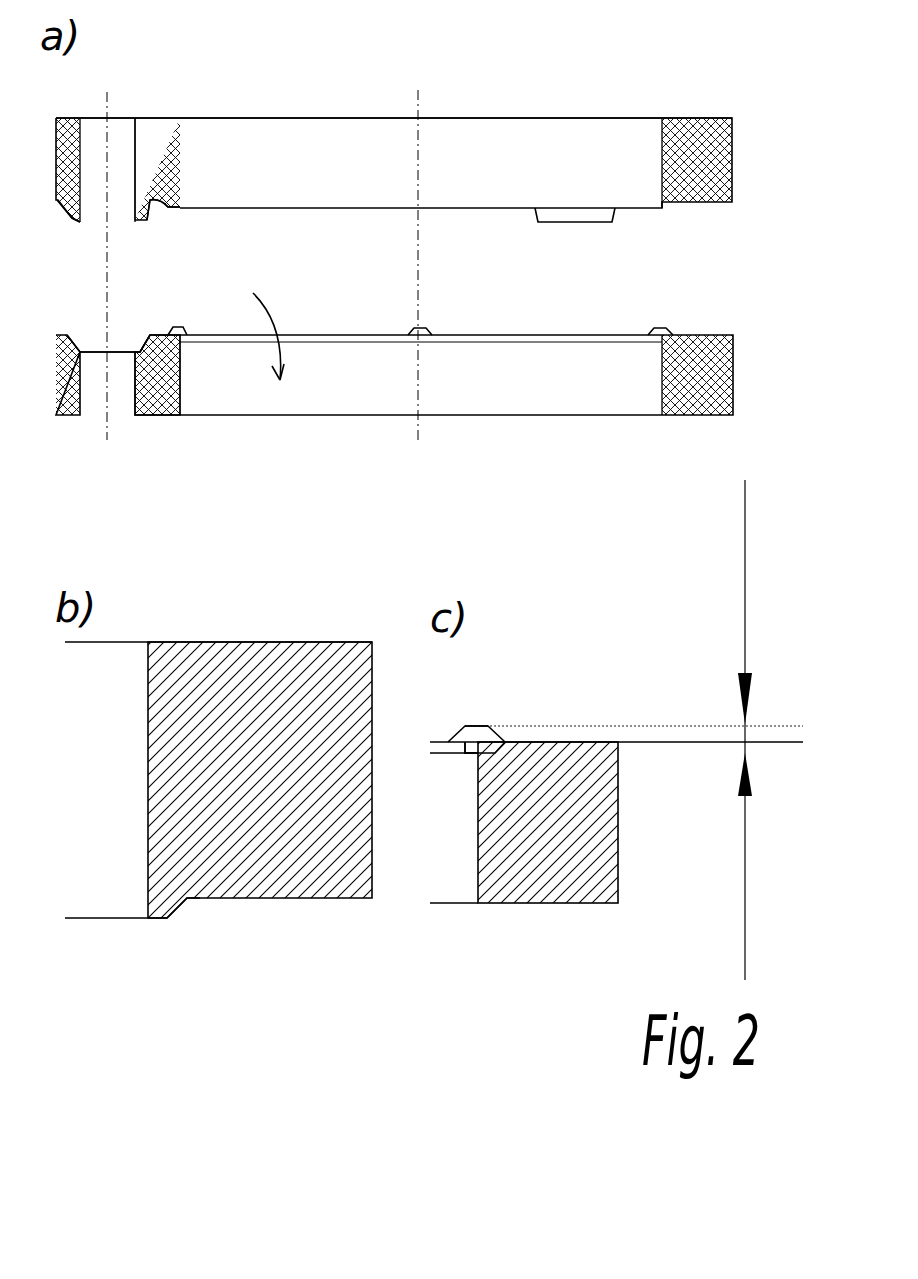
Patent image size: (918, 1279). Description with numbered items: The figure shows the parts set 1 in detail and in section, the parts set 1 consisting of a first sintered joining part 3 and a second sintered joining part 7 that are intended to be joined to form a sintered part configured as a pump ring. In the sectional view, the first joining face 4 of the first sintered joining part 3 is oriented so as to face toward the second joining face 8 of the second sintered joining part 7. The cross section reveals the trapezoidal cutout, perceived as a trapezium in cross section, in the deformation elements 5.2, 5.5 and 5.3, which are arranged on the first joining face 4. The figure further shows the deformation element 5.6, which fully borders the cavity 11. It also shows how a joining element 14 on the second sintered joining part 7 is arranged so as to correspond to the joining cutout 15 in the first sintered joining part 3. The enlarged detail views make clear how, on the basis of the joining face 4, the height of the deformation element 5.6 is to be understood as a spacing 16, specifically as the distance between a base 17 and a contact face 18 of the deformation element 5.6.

The parts set 1 is at (760, 210).
The first sintered joining part 3 is at (67, 418).
The first joining face 4 is at (151, 333).
The deformation element 5.2 is at (178, 335).
The deformation element 5.3 is at (658, 333).
The deformation element 5.5 is at (424, 335).
The deformation element 5.6 is at (668, 207).
The second sintered joining part 7 is at (157, 148).
The second joining face 8 is at (170, 210).
The cavity 11 is at (254, 313).
The joining element 14 is at (76, 215).
The joining cutout 15 is at (140, 345).
The spacing 16 is at (764, 730).
The base 17 is at (467, 753).
The contact face 18 is at (468, 710).